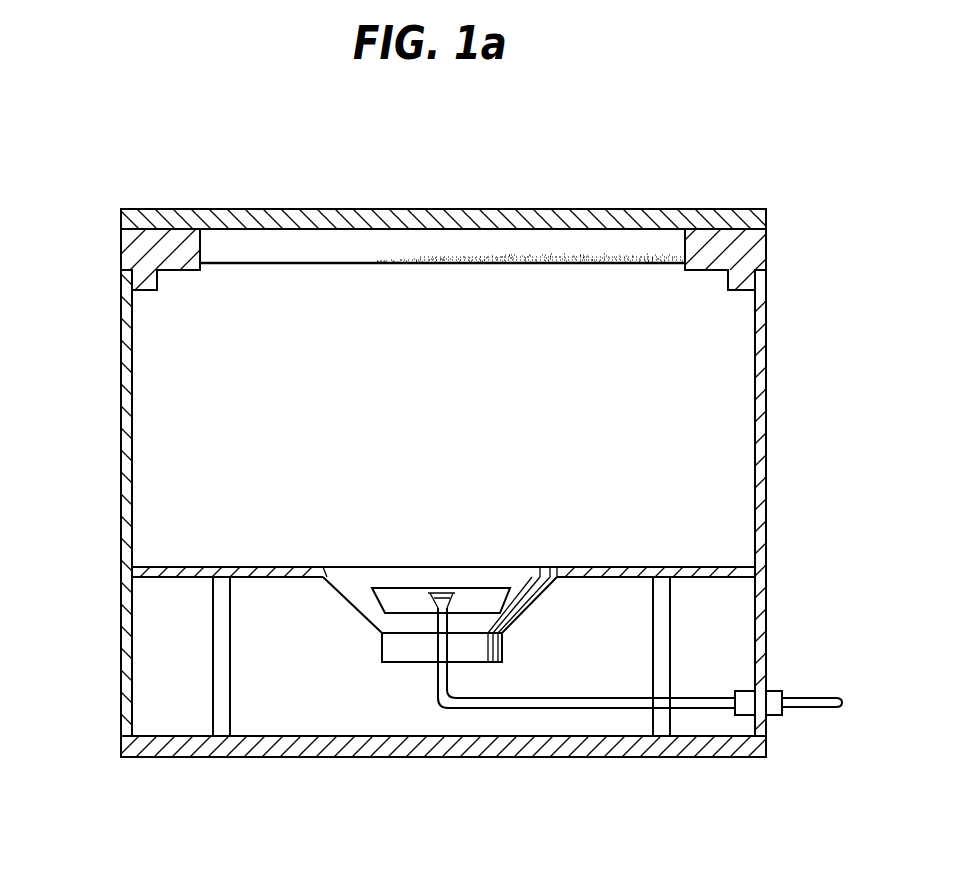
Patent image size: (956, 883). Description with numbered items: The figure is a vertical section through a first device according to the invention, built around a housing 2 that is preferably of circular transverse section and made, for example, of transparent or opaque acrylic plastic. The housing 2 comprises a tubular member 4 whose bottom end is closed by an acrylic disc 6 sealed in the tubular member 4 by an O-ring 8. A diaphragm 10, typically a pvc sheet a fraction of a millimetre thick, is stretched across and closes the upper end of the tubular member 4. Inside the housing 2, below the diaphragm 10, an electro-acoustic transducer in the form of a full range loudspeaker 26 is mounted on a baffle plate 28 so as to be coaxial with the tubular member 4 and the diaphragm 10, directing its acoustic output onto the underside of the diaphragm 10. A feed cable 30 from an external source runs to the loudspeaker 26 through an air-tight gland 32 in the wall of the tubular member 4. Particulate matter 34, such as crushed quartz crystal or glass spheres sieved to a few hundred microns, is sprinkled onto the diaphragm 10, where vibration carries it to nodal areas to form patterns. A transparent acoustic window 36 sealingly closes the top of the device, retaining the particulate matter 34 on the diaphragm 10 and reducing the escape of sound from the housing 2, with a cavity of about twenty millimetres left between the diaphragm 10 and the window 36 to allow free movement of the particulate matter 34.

The housing 2 is at (449, 482).
The tubular member 4 is at (120, 352).
The acrylic disc 6 is at (335, 747).
The O-ring 8 is at (753, 747).
The diaphragm 10 is at (372, 267).
The full range loudspeaker 26 is at (357, 603).
The baffle plate 28 is at (257, 568).
The feed cable 30 is at (812, 708).
The air-tight gland 32 is at (747, 692).
The particulate matter 34 is at (517, 253).
The transparent acoustic window 36 is at (425, 219).